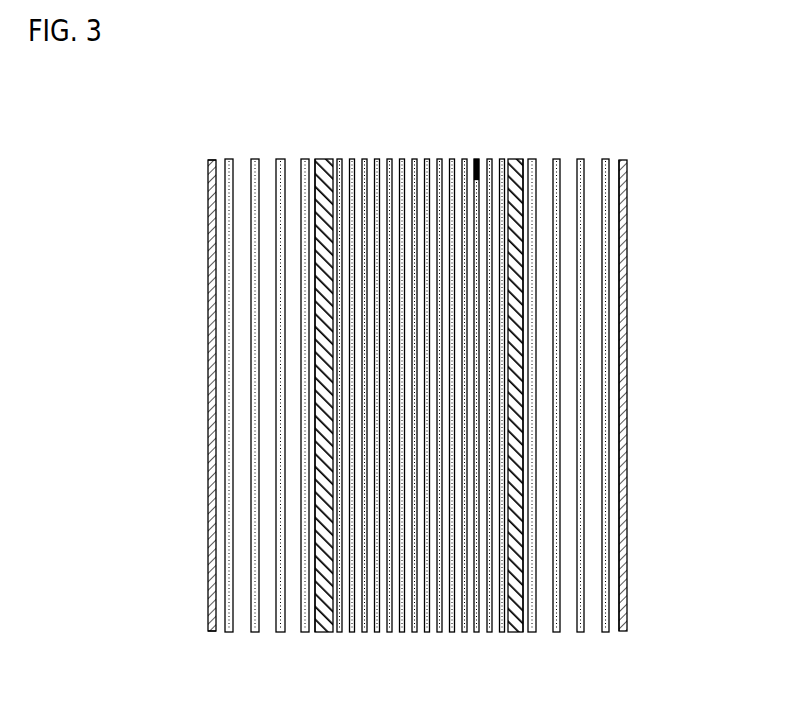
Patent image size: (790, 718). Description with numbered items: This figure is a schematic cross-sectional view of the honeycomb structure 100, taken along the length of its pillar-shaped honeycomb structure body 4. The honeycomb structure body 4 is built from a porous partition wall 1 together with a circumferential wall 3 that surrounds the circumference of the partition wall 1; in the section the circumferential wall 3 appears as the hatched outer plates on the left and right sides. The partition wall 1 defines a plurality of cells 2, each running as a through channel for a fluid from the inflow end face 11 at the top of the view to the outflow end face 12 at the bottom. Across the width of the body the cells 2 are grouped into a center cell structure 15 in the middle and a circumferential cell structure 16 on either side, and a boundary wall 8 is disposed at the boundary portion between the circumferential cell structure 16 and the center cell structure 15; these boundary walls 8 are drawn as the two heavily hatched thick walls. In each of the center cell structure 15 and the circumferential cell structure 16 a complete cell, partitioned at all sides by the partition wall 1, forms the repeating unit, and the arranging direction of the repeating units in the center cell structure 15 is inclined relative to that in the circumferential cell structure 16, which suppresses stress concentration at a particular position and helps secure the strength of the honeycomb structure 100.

The honeycomb structure 100 is at (684, 50).
The partition wall 1 is at (477, 160).
The cells 2 is at (293, 178).
The circumferential wall 3 is at (210, 345).
The honeycomb structure body 4 is at (634, 252).
The boundary wall 8 is at (317, 480).
The inflow end face 11 is at (217, 147).
The outflow end face 12 is at (211, 658).
The center cell structure 15 is at (505, 640).
The circumferential cell structure 16 is at (315, 640).